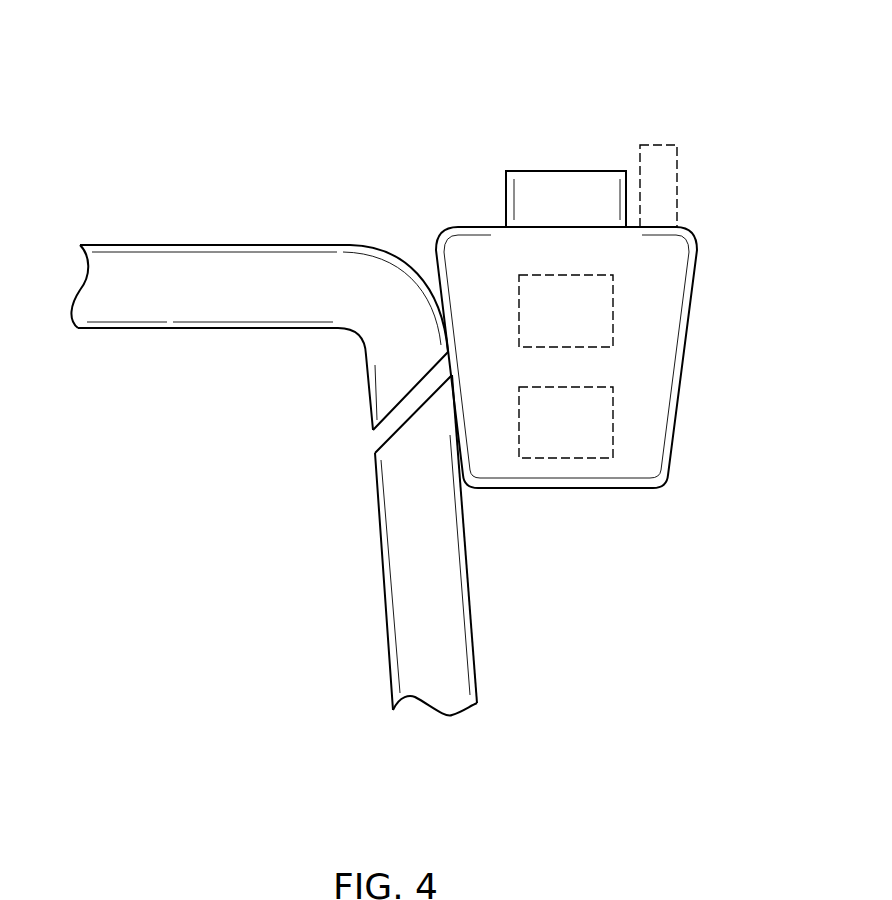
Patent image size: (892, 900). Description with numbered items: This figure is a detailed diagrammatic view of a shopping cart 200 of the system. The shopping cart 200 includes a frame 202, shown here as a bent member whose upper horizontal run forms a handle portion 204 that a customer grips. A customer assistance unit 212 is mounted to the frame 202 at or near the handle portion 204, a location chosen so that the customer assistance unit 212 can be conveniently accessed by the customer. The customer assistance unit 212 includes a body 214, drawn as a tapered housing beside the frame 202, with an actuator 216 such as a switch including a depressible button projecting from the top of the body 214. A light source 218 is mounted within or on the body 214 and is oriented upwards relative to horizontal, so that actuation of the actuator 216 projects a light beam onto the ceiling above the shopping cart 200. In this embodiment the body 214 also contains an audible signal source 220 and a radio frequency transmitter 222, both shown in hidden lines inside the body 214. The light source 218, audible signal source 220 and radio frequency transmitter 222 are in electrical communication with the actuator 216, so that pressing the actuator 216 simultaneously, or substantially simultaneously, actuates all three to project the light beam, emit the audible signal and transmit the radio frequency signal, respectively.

The shopping cart 200 is at (573, 52).
The frame 202 is at (403, 637).
The handle portion 204 is at (135, 222).
The customer assistance unit 212 is at (716, 142).
The body 214 is at (683, 366).
The actuator 216 is at (528, 177).
The light source 218 is at (677, 175).
The audible signal source 220 is at (600, 322).
The radio frequency transmitter 222 is at (600, 432).